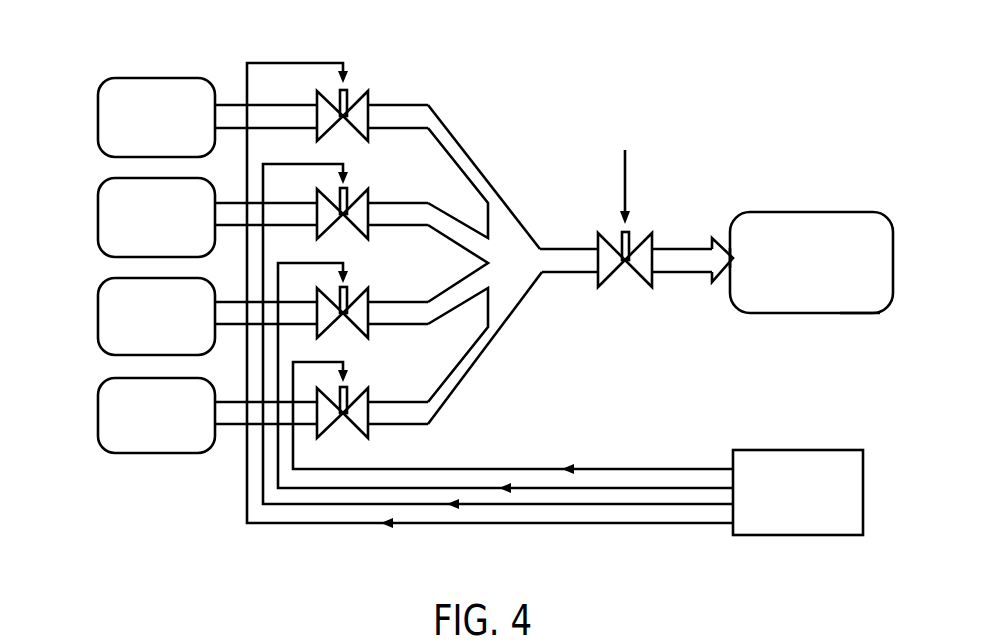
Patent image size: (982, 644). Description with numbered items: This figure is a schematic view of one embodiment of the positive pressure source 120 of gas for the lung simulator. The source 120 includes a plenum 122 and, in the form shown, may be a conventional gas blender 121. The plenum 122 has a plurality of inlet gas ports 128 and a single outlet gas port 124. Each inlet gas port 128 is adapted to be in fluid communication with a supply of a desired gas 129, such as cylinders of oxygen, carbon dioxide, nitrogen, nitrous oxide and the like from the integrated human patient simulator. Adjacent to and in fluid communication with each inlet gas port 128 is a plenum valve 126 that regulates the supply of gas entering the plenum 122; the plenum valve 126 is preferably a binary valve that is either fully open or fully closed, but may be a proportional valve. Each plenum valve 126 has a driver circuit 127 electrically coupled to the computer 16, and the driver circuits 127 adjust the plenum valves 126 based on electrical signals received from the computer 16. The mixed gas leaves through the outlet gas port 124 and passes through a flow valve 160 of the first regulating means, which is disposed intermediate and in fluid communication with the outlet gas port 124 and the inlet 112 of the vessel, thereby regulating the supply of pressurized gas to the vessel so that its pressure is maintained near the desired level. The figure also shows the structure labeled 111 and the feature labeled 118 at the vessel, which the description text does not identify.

The computer 16 is at (803, 450).
The process chamber 111 is at (877, 223).
The inlet of the vessel 112 is at (733, 257).
The chamber interior 118 is at (832, 287).
The positive pressure source 120 is at (468, 58).
The gas blender 121 is at (515, 97).
The plenum 122 is at (508, 208).
The outlet gas port 124 is at (573, 273).
The plenum valves 126 is at (370, 94).
The driver circuits 127 is at (595, 466).
The inlet gas ports 128 is at (478, 183).
The supply of a desired gas 129 is at (98, 118).
The flow valve 160 is at (635, 273).